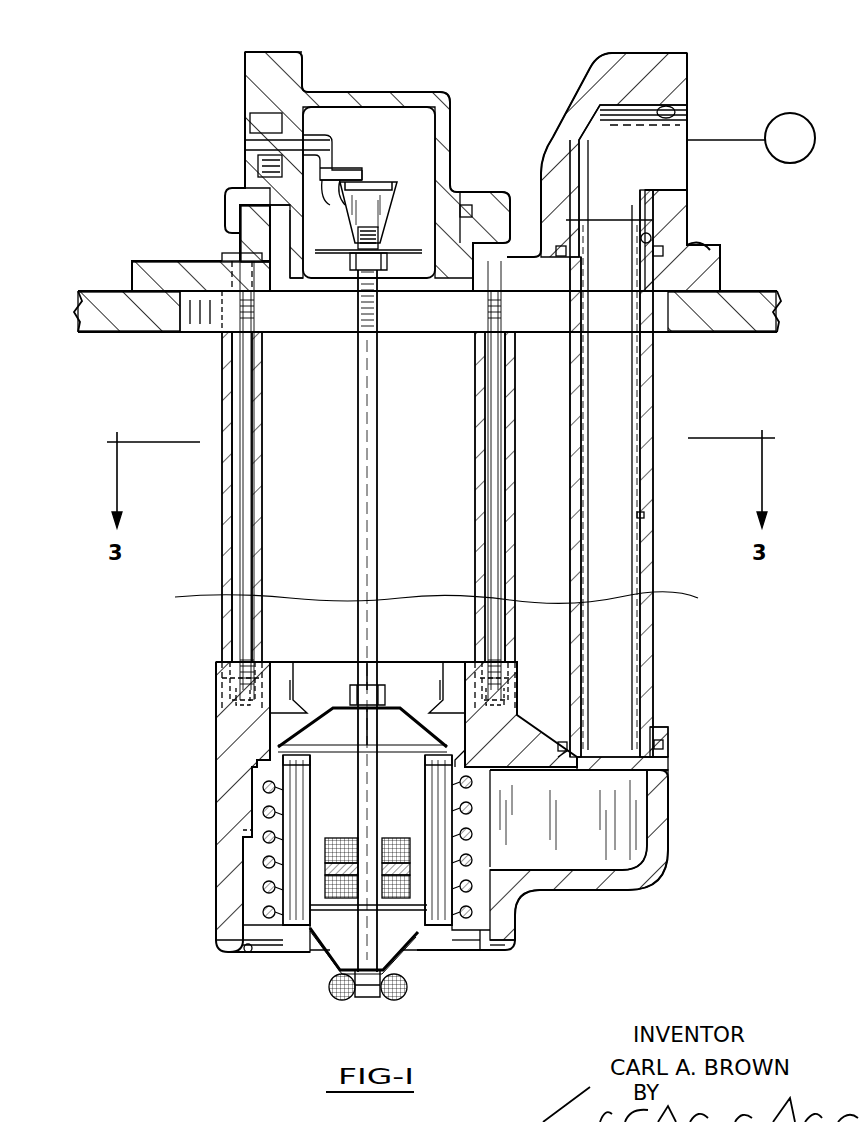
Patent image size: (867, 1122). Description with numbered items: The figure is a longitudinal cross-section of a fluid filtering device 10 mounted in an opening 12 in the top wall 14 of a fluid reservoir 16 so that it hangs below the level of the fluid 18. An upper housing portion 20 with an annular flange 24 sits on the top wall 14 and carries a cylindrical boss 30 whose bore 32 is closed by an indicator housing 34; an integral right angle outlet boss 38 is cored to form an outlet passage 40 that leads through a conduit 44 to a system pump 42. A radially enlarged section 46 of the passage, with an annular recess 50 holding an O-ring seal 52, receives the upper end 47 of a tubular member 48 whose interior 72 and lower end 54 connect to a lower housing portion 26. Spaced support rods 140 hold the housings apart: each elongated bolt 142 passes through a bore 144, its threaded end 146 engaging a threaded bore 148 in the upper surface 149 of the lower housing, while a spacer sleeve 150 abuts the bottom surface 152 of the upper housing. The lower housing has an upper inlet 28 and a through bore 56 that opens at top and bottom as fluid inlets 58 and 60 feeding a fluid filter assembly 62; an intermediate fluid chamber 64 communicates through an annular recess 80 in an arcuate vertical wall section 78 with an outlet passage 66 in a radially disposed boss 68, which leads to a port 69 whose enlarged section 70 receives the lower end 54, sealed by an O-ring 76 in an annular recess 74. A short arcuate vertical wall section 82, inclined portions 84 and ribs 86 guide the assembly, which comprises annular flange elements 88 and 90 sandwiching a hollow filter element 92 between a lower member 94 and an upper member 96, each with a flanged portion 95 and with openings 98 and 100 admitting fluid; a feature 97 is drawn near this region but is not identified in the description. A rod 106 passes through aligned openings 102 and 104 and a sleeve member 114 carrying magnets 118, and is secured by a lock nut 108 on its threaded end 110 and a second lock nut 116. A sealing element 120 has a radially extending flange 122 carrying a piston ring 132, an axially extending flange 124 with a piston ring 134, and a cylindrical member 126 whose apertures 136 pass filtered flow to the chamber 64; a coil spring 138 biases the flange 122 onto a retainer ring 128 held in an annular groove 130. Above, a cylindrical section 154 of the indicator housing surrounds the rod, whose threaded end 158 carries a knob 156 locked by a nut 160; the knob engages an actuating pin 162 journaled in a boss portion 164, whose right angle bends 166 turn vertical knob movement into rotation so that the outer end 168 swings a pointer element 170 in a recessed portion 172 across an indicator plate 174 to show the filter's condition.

The fluid filtering device 10 is at (468, 97).
The opening 12 is at (662, 335).
The top wall 14 is at (752, 289).
The fluid reservoir 16 is at (110, 286).
The fluid 18 is at (688, 598).
The upper housing portion 20 is at (178, 260).
The annular flange 24 is at (132, 266).
The lower housing portion 26 is at (214, 722).
The upper inlet 28 is at (315, 670).
The cylindrical boss 30 is at (478, 205).
The bore 32 is at (282, 293).
The indicator housing 34 is at (318, 92).
The right angle outlet boss 38 is at (648, 53).
The outlet passage 40 is at (672, 108).
The system pump 42 is at (802, 116).
The conduit 44 is at (740, 150).
The radially enlarged section 46 is at (652, 238).
The upper end 47 is at (598, 218).
The tubular member 48 is at (656, 400).
The annular recess 50 is at (665, 251).
The O-ring seal 52 is at (560, 258).
The lower end 54 is at (598, 801).
The through bore 56 is at (258, 790).
The fluid inlet 58 is at (432, 672).
The fluid inlet 60 is at (292, 953).
The fluid filter assembly 62 is at (373, 694).
The intermediate fluid chamber 64 is at (264, 872).
The outlet passage 66 is at (617, 890).
The radially disposed boss 68 is at (670, 860).
The port 69 is at (658, 772).
The radially enlarged section 70 is at (664, 763).
The interior 72 is at (646, 516).
The annular recess 74 is at (664, 745).
The O-ring 76 is at (582, 757).
The arcuate vertical wall section 78 is at (238, 918).
The annular recess 80 is at (255, 835).
The arcuate vertical wall section 82 is at (262, 740).
The inclined portions 84 is at (235, 684).
The ribs 86 is at (292, 672).
The annular flange element 88 is at (303, 760).
The annular flange element 90 is at (302, 912).
The filter element 92 is at (430, 840).
The lower member 94 is at (332, 988).
The flanged portion 95 is at (432, 955).
The upper member 96 is at (350, 704).
The shoulder 97 is at (300, 732).
The openings 98 is at (326, 964).
The openings 100 is at (324, 732).
The opening 102 is at (368, 998).
The opening 104 is at (370, 722).
The rod 106 is at (380, 553).
The lock nut 108 is at (346, 1001).
The threaded end 110 is at (400, 1001).
The sleeve member 114 is at (382, 801).
The second lock nut 116 is at (360, 680).
The magnets 118 is at (336, 838).
The sealing element 120 is at (470, 955).
The radially extending flange 122 is at (516, 914).
The axially extending flange 124 is at (492, 776).
The cylindrical member 126 is at (472, 818).
The retainer ring 128 is at (258, 960).
The annular groove 130 is at (244, 956).
The piston ring 132 is at (516, 940).
The piston ring 134 is at (463, 757).
The apertures 136 is at (478, 840).
The coil spring 138 is at (482, 873).
The support rods 140 is at (221, 400).
The elongated bolt 142 is at (255, 508).
The bore 144 is at (222, 262).
The threaded end 146 is at (222, 660).
The threaded bores 148 is at (228, 707).
The upper surface 149 is at (497, 672).
The spacer sleeve 150 is at (258, 436).
The bottom surface 152 is at (205, 333).
The cylindrical section 154 is at (308, 270).
The knob 156 is at (380, 181).
The threaded end 158 is at (382, 233).
The nut 160 is at (385, 262).
The actuating pin 162 is at (340, 147).
The boss portion 164 is at (306, 128).
The right angle bends 166 is at (327, 195).
The outer end 168 is at (245, 146).
The pointer element 170 is at (240, 138).
The recessed portion 172 is at (250, 120).
The indicator plate 174 is at (244, 82).